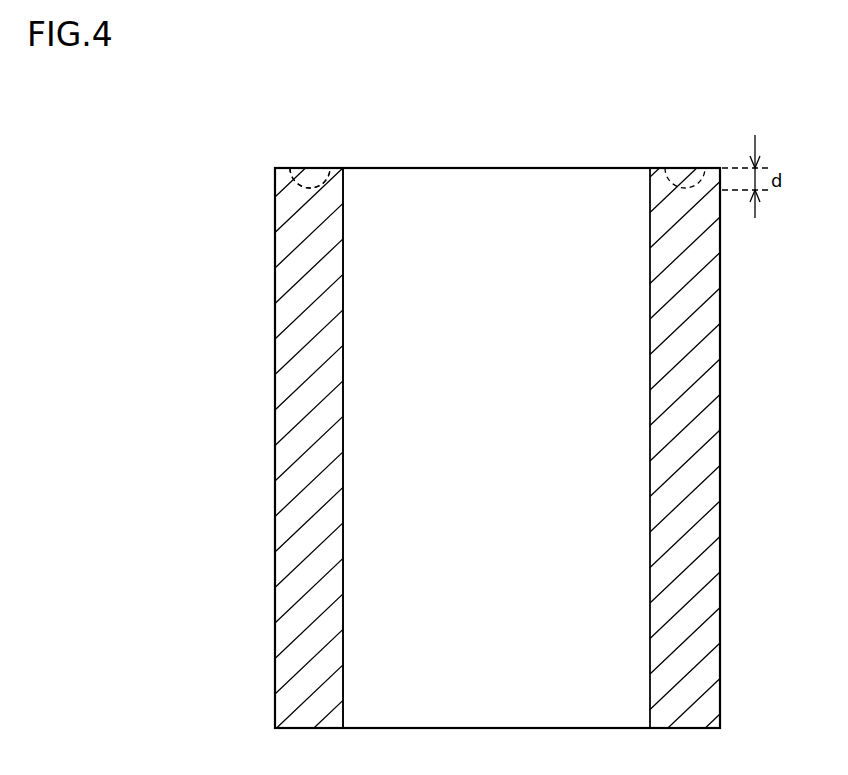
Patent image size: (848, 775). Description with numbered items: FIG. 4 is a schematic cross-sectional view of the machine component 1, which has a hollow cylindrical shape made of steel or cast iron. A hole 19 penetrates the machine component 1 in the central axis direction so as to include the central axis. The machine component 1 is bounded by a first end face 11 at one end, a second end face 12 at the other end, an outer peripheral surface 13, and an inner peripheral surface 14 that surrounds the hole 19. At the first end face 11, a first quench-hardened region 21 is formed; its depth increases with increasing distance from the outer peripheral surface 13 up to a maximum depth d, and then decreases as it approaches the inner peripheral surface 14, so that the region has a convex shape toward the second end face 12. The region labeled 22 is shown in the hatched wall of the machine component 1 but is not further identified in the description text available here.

The machine component 1 is at (796, 147).
The first end face 11 is at (283, 166).
The second end face 12 is at (680, 730).
The outer peripheral surface 13 is at (721, 371).
The inner peripheral surface 14 is at (344, 218).
The hole 19 is at (541, 234).
The first quench-hardened region 21 is at (310, 174).
The side wall 22 is at (292, 262).